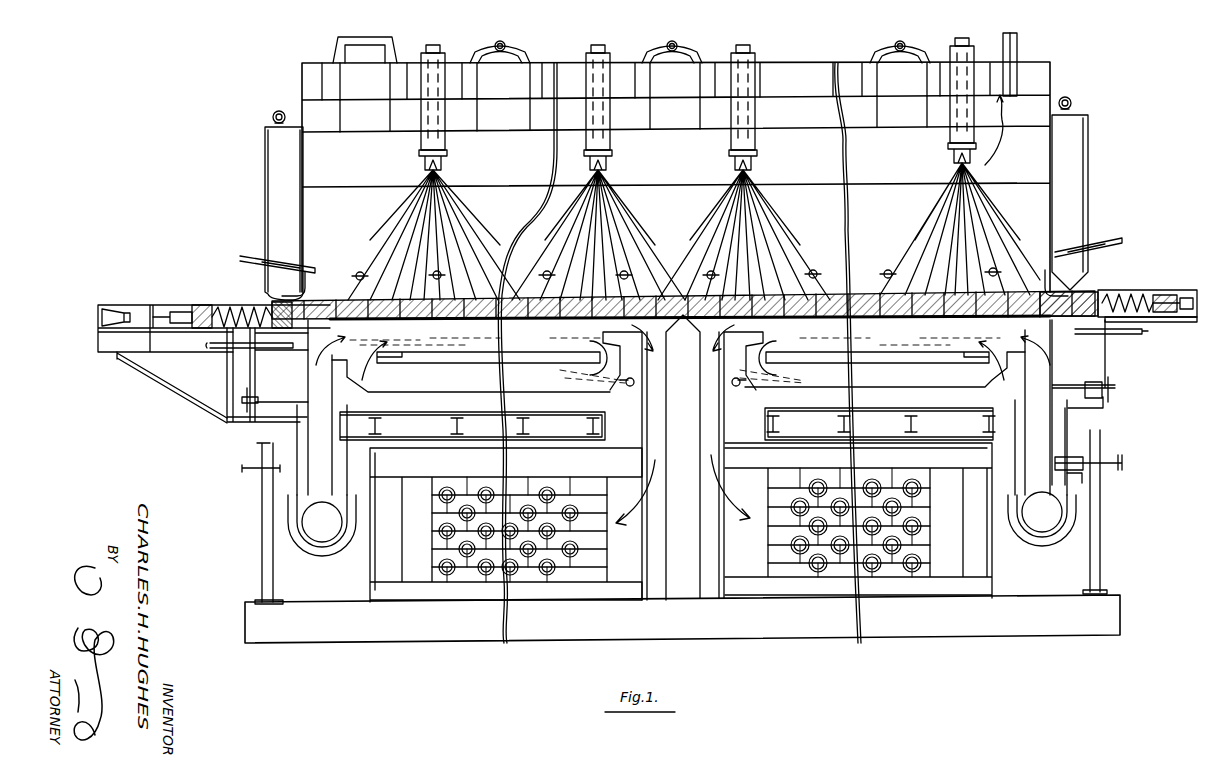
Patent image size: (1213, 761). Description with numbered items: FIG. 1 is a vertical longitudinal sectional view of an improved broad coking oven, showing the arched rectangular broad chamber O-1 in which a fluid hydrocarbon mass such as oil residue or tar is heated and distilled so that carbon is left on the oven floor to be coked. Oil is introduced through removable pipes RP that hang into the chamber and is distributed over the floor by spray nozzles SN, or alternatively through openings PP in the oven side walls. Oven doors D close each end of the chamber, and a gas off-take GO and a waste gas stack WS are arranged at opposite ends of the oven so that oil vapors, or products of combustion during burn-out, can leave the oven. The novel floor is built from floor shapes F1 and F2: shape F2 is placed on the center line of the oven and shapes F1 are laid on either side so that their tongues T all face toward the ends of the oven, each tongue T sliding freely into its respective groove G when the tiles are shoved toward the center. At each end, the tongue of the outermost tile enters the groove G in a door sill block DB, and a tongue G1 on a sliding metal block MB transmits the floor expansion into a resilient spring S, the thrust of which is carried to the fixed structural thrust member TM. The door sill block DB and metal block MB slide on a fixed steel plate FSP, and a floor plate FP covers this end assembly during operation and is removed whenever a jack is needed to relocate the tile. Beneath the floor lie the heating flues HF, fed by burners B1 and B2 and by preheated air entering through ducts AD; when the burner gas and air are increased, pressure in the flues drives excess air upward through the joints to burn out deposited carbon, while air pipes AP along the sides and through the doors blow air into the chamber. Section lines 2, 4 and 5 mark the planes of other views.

The gas off-take pipe GO is at (365, 50).
The removable pipes RP is at (600, 45).
The waste gas stack WS is at (1017, 40).
The spray nozzles SN is at (441, 165).
The oven doors D is at (676, 198).
The arched rectangular broad chamber O-1 is at (667, 175).
The air pipes AP is at (255, 257).
The door sill block DB is at (310, 280).
The sliding metal block MB is at (268, 296).
The floor plate FP is at (188, 309).
The spring S is at (236, 310).
The tongue G1 is at (724, 294).
The structural thrust member TM is at (98, 318).
The burner B1 is at (245, 350).
The burner B2 is at (1125, 333).
The fixed steel plate FSP is at (1145, 322).
The ducts AD is at (682, 438).
The heating flue HF is at (683, 357).
The tongue T is at (570, 323).
The floor shape F1 is at (683, 298).
The floor shape F2 is at (688, 288).
The groove G is at (684, 285).
The openings PP is at (550, 275).
The section line 2 is at (65, 268).
The section line 4 is at (440, 465).
The section line 5 is at (73, 298).